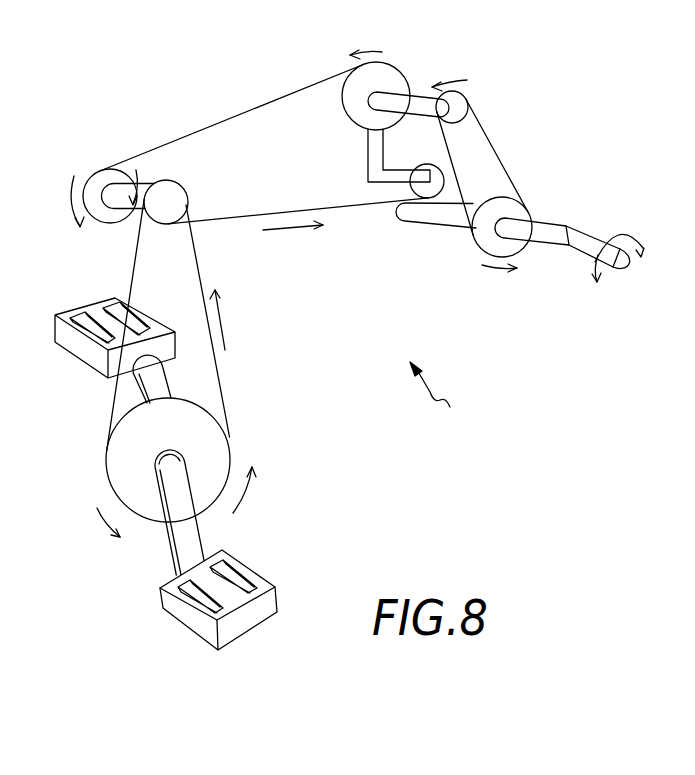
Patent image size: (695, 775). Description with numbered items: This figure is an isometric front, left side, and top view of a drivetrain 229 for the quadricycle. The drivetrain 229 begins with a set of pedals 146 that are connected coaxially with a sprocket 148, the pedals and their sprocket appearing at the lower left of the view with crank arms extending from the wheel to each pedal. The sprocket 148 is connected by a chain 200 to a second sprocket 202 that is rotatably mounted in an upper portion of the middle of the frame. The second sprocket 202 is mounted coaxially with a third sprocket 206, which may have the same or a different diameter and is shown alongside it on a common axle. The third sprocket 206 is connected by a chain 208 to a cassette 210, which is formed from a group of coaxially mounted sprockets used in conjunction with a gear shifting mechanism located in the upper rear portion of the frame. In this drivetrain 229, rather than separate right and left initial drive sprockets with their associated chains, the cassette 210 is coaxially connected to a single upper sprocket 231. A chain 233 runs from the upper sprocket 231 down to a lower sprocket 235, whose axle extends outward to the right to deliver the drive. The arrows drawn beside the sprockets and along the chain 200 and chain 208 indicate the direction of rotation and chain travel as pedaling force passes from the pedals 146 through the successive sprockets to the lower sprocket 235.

The pedal 146 is at (77, 345).
The flywheel 148 is at (115, 458).
The chain 200 is at (217, 382).
The second sprocket 202 is at (175, 192).
The third sprocket 206 is at (105, 172).
The chain 208 is at (268, 102).
The cassette 210 is at (388, 75).
The drivetrain 229 is at (447, 401).
The upper sprocket 231 is at (455, 102).
The chain 233 is at (493, 147).
The lower sprocket 235 is at (515, 207).